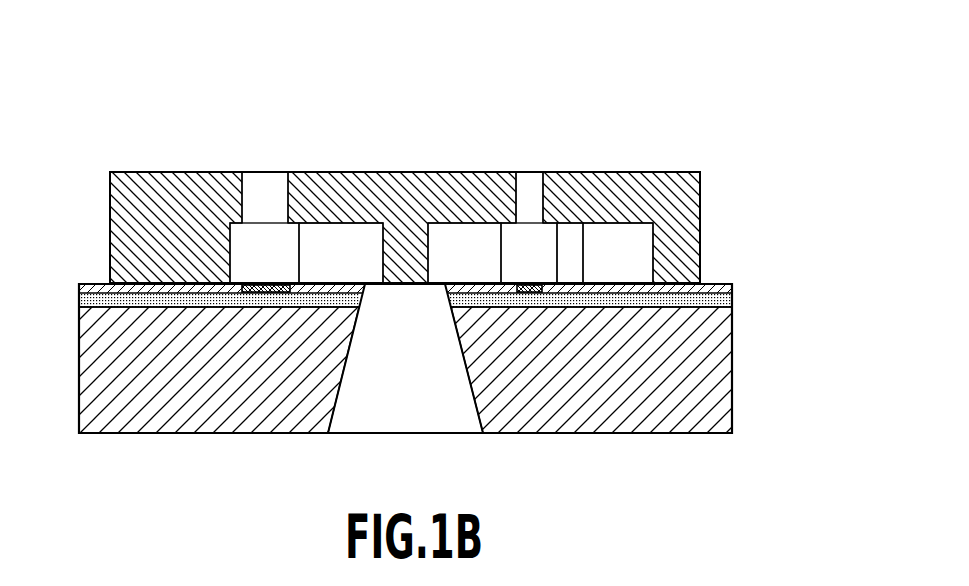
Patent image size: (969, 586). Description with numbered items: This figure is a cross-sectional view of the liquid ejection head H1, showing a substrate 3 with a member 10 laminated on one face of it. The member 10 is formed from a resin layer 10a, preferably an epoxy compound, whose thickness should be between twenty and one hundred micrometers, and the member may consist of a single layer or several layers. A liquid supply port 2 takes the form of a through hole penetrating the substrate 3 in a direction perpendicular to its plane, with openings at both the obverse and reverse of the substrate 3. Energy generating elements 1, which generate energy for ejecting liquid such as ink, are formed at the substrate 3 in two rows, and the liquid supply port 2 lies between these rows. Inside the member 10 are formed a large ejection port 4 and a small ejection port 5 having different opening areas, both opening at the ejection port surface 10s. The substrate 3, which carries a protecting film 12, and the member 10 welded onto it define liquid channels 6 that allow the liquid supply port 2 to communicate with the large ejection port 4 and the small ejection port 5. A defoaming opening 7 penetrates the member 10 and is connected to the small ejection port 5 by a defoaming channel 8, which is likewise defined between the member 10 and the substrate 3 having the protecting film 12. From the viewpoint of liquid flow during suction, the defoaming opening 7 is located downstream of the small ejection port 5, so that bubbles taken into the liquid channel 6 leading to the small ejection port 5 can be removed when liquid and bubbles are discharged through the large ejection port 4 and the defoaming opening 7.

The liquid ejection head H1 is at (500, 82).
The energy generating element 1 is at (257, 292).
The liquid supply port 2 is at (404, 410).
The substrate 3 is at (723, 367).
The large ejection port 4 is at (286, 175).
The small ejection port 5 is at (538, 178).
The liquid channel 6 is at (437, 245).
The defoaming opening 7 is at (638, 247).
The defoaming channel 8 is at (648, 250).
The member 10 is at (160, 178).
The ejection port surface 10s is at (338, 176).
The resin layer 10a is at (680, 177).
The protecting film 12 is at (734, 288).